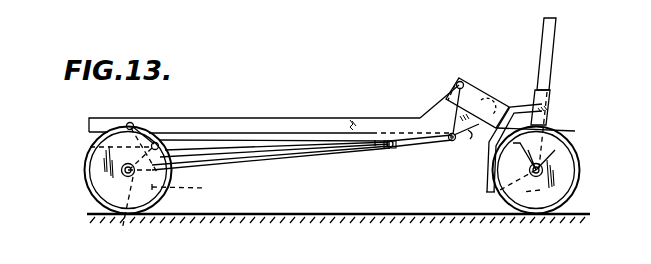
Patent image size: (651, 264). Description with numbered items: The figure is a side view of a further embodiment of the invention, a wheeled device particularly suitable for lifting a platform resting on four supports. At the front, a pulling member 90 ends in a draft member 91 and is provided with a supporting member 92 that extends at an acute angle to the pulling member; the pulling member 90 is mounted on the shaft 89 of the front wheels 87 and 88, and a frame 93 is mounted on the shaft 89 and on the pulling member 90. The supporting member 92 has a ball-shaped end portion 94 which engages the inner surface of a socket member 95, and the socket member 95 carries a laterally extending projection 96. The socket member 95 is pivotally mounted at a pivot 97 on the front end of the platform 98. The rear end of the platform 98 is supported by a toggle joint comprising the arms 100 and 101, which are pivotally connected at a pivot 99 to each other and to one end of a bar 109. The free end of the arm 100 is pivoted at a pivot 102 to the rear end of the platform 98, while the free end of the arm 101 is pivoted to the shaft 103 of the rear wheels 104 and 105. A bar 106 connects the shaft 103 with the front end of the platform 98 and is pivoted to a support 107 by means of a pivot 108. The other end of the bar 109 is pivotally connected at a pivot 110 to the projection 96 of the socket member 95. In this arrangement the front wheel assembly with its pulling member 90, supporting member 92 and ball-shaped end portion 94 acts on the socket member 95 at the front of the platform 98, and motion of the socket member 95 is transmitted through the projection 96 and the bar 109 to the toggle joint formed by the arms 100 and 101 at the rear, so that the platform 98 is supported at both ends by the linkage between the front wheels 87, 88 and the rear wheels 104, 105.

The front wheel 87 is at (506, 193).
The front wheel 88 is at (563, 193).
The shaft of the front wheel 89 is at (543, 168).
The pulling member 90 is at (546, 110).
The draft member 91 is at (557, 52).
The supporting member 92 is at (575, 131).
The frame 93 is at (487, 172).
The ball-shaped end portion 94 is at (478, 86).
The socket member 95 is at (493, 98).
The laterally extending projection 96 is at (465, 141).
The pivot 97 is at (457, 81).
The platform 98 is at (307, 121).
The pivot 99 is at (90, 147).
The arm 100 is at (152, 125).
The arm 101 is at (137, 213).
The pivot 102 is at (134, 124).
The shaft of the rear wheels 103 is at (122, 170).
The rear wheel 104 is at (100, 182).
The rear wheel 105 is at (271, 170).
The bar 106 is at (288, 157).
The support 107 is at (374, 152).
The pivot 108 is at (392, 148).
The bar 109 is at (222, 144).
The pivot 110 is at (438, 100).